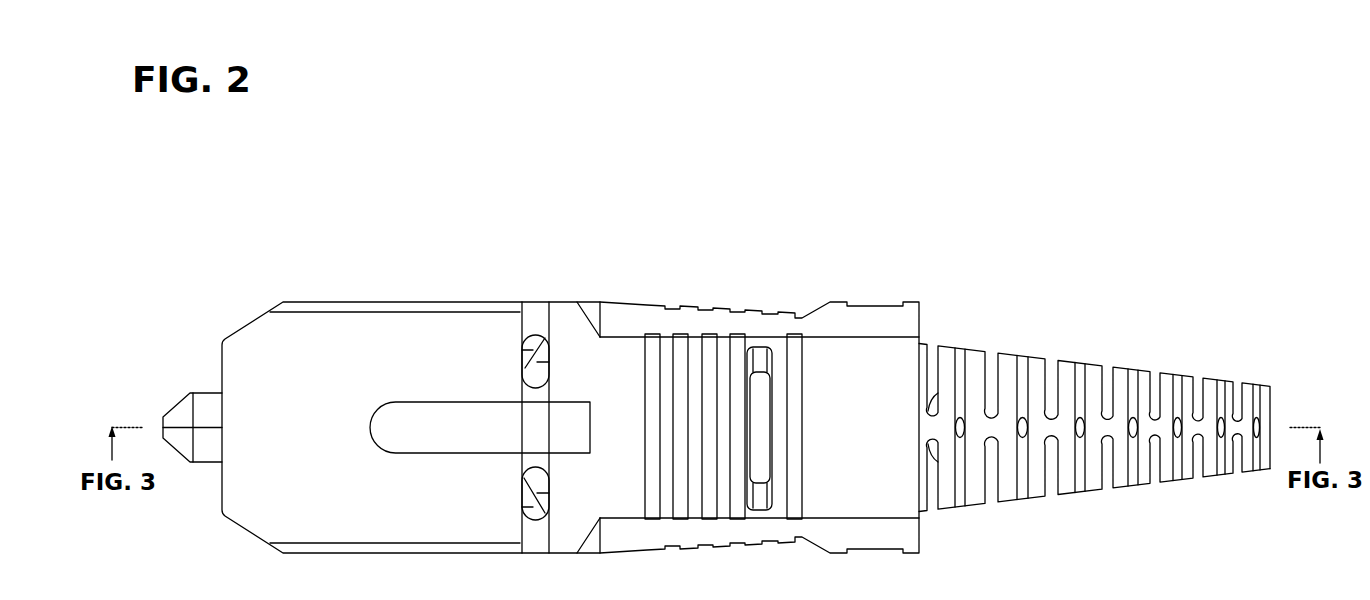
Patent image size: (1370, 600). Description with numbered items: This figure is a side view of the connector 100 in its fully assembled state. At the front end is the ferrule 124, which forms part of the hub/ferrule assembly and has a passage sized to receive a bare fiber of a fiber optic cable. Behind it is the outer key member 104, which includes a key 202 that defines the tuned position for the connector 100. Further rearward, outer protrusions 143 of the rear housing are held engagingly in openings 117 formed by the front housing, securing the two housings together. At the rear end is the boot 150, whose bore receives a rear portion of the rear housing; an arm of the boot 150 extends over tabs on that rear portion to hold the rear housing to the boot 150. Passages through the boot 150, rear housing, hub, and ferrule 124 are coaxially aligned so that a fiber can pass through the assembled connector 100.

The connector 100 is at (1140, 164).
The outer key member 104 is at (468, 303).
The openings 117 is at (761, 347).
The ferrule 124 is at (207, 405).
The outer protrusions 143 is at (765, 399).
The boot 150 is at (1005, 360).
The key 202 is at (455, 417).